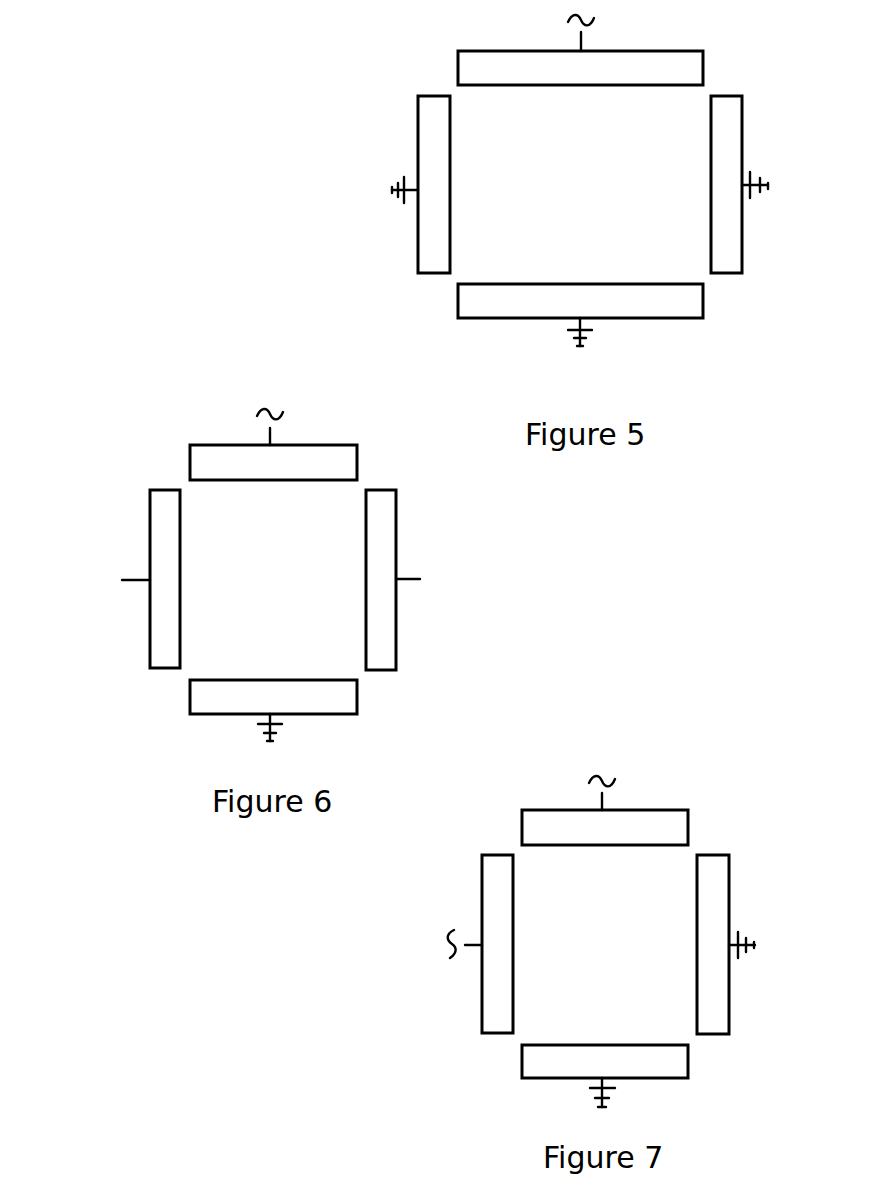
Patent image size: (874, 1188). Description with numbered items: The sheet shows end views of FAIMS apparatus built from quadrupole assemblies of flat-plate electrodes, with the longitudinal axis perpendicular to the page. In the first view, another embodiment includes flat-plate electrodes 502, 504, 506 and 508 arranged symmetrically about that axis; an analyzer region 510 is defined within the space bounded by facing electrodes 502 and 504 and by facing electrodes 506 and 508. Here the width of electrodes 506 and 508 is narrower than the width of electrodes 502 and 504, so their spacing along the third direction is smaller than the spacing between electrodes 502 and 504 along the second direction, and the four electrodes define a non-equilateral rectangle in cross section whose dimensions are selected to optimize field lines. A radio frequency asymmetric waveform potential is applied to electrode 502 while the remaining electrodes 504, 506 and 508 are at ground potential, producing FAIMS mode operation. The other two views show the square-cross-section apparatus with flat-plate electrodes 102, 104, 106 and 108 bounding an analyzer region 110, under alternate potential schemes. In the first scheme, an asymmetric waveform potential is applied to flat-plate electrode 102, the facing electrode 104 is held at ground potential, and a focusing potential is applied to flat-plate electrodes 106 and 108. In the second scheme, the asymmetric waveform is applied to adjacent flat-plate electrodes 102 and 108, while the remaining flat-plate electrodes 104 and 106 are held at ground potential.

In FIG. 5, the flat-plate electrode 502 is at (486, 60).
In FIG. 5, the flat-plate electrode 504 is at (620, 303).
In FIG. 5, the flat-plate electrode 506 is at (727, 226).
In FIG. 5, the flat-plate electrode 508 is at (430, 130).
In FIG. 5, the analyzer region 510 is at (478, 190).
In FIG. 6, the flat-plate electrode 102 is at (240, 462).
In FIG. 7, the flat-plate electrode 102 is at (653, 823).
In FIG. 6, the flat-plate electrode 104 is at (323, 700).
In FIG. 7, the flat-plate electrode 104 is at (655, 1062).
In FIG. 6, the flat-plate electrode 106 is at (383, 646).
In FIG. 7, the flat-plate electrode 106 is at (715, 1007).
In FIG. 6, the flat-plate electrode 108 is at (163, 638).
In FIG. 7, the flat-plate electrode 108 is at (495, 1001).
In FIG. 6, the analyzer region 110 is at (222, 632).
In FIG. 7, the analyzer region 110 is at (555, 993).